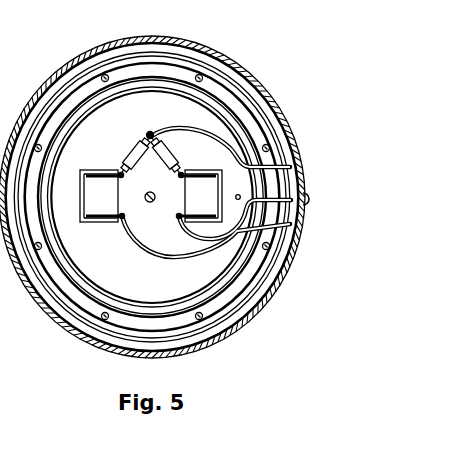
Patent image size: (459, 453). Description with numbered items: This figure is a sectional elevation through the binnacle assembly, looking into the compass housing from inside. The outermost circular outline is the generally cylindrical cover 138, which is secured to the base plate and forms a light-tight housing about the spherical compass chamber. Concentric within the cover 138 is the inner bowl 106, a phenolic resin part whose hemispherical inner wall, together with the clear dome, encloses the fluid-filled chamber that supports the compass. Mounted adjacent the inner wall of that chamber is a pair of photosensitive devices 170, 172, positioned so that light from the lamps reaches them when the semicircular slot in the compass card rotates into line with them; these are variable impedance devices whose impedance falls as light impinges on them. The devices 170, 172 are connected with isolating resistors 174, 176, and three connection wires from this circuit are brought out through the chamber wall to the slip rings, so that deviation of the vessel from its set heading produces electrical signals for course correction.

The cover 138 is at (146, 38).
The inner bowl 106 is at (238, 103).
The photosensitive device 170 is at (84, 203).
The photosensitive device 172 is at (208, 189).
The isolating resistor 174 is at (129, 157).
The isolating resistor 176 is at (174, 157).